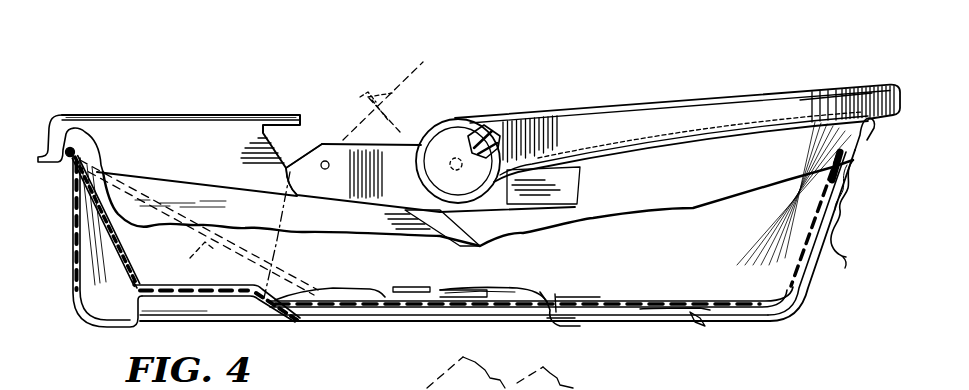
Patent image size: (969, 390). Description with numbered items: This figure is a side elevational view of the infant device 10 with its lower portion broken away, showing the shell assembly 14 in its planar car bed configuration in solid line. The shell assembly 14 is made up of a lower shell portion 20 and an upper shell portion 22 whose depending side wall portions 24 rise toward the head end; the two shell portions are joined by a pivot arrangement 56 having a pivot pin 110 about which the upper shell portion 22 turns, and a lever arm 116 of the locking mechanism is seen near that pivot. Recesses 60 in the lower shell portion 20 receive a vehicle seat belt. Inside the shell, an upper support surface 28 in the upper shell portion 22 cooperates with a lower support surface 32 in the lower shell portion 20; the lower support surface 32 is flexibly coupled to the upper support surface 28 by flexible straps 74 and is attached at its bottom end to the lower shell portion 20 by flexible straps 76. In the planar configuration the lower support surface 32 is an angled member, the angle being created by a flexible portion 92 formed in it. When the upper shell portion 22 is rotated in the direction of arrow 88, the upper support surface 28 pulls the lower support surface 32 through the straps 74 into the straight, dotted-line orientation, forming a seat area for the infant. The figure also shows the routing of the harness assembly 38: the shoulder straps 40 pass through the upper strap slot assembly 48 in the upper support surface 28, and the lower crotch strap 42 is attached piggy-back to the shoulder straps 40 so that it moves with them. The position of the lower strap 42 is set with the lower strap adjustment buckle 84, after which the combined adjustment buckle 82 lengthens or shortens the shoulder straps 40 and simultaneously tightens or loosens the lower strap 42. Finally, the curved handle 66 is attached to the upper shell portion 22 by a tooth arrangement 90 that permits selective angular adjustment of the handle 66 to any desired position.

The device 10 is at (632, 94).
The shell assembly 14 is at (173, 111).
The lower shell portion 20 is at (74, 278).
The upper shell portion 22 is at (410, 76).
The side wall portions 24 is at (757, 283).
The upper support surface 28 is at (666, 300).
The lower support surface 32 is at (117, 239).
The harness assembly 38 is at (500, 287).
The shoulder straps 40 is at (547, 294).
The lower crotch strap 42 is at (338, 290).
The upper strap slot assembly 48 is at (563, 295).
The pivot arrangement 56 is at (332, 132).
The recesses 60 is at (288, 149).
The curved handle 66 is at (737, 100).
The flexible straps 74 is at (257, 292).
The flexible straps 76 is at (73, 148).
The combined adjustment buckle 82 is at (841, 208).
The lower strap adjustment buckle 84 is at (700, 323).
The arrow 88 is at (395, 118).
The tooth arrangement 90 is at (490, 130).
The flexible portion 92 is at (136, 283).
The pivot pin 110 is at (325, 170).
The lever arm 116 is at (563, 185).